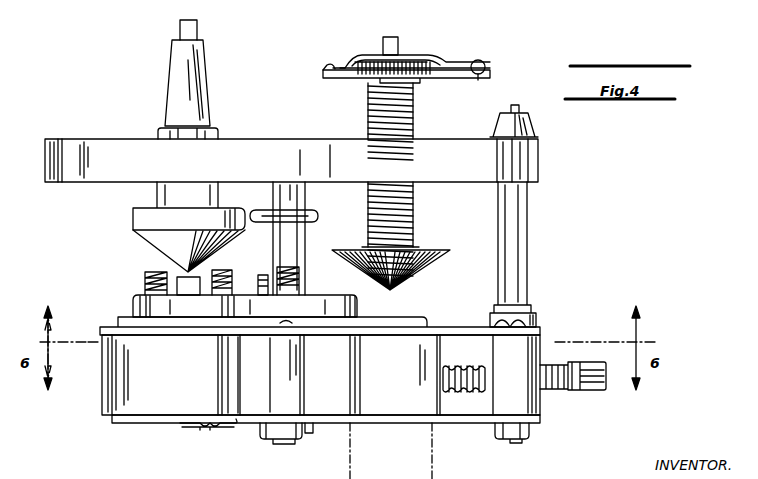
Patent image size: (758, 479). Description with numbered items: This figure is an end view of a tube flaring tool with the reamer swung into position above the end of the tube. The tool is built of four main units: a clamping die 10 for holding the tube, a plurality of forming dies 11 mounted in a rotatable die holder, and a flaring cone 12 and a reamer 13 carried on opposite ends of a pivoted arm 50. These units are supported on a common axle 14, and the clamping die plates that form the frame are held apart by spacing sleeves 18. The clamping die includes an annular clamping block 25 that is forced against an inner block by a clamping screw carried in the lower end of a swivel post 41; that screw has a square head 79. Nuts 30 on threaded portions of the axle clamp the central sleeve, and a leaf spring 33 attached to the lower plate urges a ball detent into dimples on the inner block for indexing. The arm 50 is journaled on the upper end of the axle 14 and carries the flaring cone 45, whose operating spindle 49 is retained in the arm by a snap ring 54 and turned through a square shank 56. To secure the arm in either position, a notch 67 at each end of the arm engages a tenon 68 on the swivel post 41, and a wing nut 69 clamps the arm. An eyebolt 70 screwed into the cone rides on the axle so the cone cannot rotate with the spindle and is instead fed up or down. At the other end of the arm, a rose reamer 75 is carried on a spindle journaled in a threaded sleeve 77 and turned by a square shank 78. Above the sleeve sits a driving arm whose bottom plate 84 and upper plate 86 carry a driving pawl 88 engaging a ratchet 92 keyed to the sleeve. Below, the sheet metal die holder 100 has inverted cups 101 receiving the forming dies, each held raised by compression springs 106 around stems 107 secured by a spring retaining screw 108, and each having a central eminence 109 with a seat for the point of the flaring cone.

The clamping die 10 is at (100, 393).
The forming dies 11 is at (128, 312).
The flaring cone 12 is at (128, 219).
The reamer 13 is at (422, 238).
The axle 14 is at (298, 200).
The spacing sleeves 18 is at (296, 367).
The annular clamping block 25 is at (398, 400).
The nuts 30 is at (306, 429).
The leaf spring 33 is at (220, 428).
The swivel post 41 is at (515, 271).
The flaring cone 45 is at (155, 236).
The operating spindle 49 is at (192, 92).
The pivoted arm 50 is at (344, 146).
The snap ring 54 is at (212, 130).
The square shank 56 is at (190, 32).
The notch 67 is at (68, 150).
The tenon 68 is at (518, 160).
The wing nut 69 is at (528, 128).
The eyebolt 70 is at (318, 216).
The rose reamer 75 is at (432, 260).
The threaded sleeve 77 is at (408, 216).
The square shank 78 is at (389, 37).
The square head 79 is at (584, 390).
The bottom plate 84 is at (447, 76).
The upper plate 86 is at (440, 60).
The driving pawl 88 is at (494, 65).
The ratchet 92 is at (350, 60).
The die holder 100 is at (416, 308).
The inverted cups 101 is at (146, 306).
The compression springs 106 is at (146, 274).
The stems 107 is at (233, 278).
The spring retaining screw 108 is at (301, 258).
The central eminence 109 is at (192, 276).